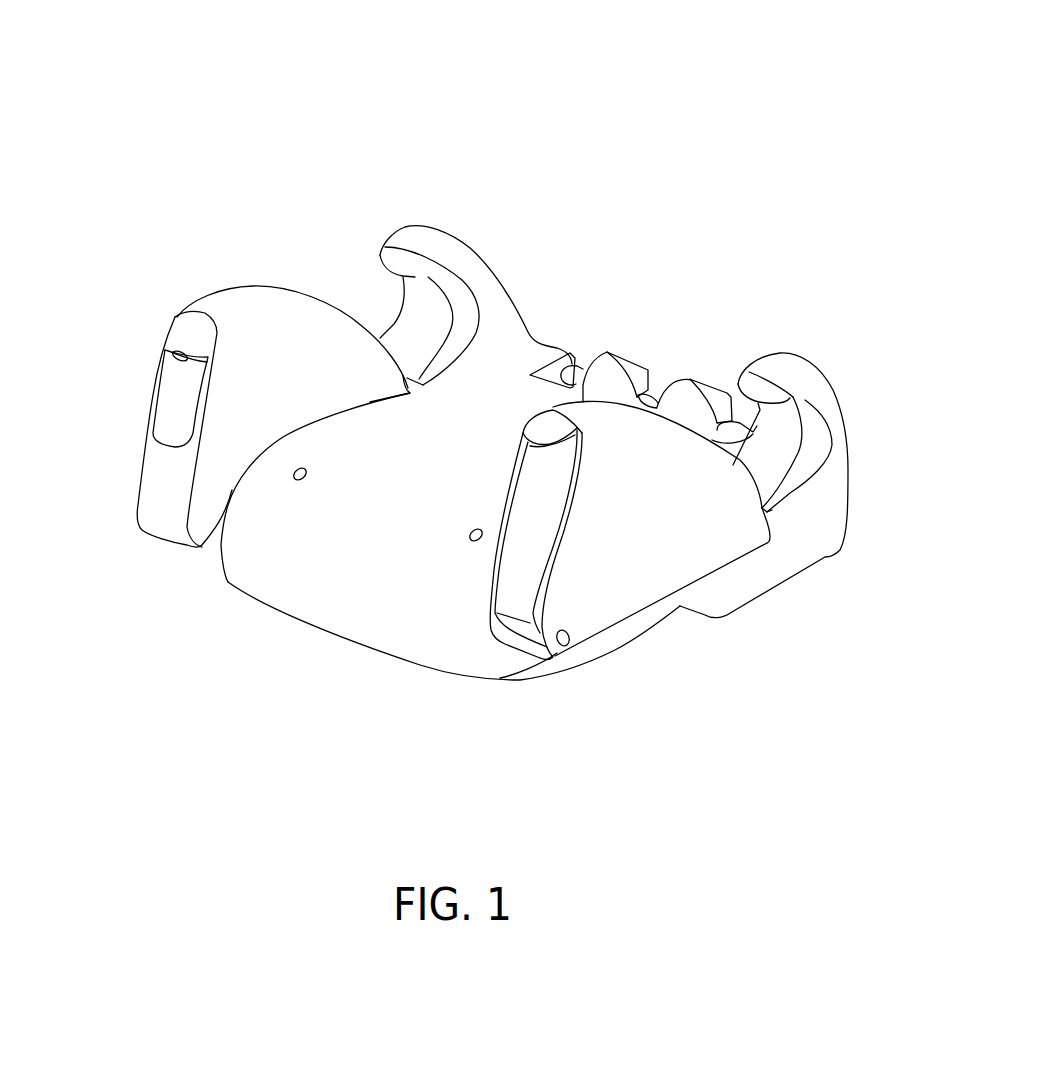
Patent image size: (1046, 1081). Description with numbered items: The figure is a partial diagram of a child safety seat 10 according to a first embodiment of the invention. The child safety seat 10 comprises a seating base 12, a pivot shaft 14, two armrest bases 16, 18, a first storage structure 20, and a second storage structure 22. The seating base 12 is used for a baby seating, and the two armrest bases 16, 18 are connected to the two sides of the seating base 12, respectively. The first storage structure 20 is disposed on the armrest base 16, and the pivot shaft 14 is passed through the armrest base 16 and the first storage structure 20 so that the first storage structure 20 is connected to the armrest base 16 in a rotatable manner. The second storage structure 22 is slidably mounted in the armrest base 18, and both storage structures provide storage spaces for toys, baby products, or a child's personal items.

The child safety seat 10 is at (697, 108).
The seating base 12 is at (340, 562).
The pivot shaft 14 is at (569, 643).
The armrest base 16 is at (610, 585).
The armrest base 18 is at (262, 348).
The first storage structure 20 is at (517, 573).
The second storage structure 22 is at (168, 397).